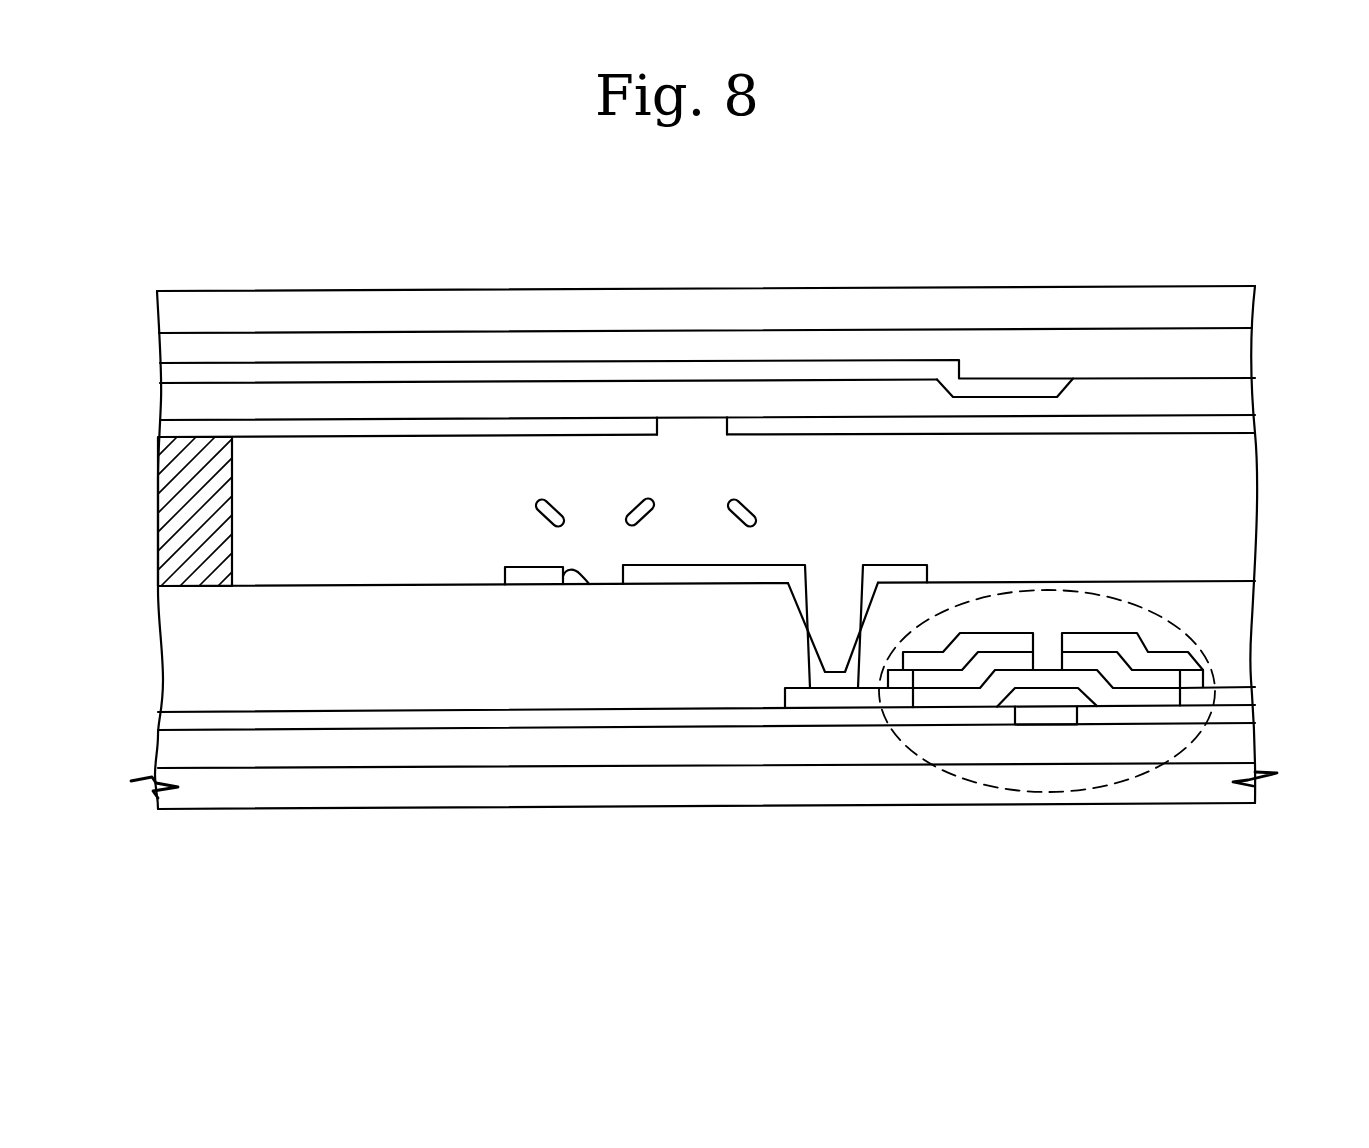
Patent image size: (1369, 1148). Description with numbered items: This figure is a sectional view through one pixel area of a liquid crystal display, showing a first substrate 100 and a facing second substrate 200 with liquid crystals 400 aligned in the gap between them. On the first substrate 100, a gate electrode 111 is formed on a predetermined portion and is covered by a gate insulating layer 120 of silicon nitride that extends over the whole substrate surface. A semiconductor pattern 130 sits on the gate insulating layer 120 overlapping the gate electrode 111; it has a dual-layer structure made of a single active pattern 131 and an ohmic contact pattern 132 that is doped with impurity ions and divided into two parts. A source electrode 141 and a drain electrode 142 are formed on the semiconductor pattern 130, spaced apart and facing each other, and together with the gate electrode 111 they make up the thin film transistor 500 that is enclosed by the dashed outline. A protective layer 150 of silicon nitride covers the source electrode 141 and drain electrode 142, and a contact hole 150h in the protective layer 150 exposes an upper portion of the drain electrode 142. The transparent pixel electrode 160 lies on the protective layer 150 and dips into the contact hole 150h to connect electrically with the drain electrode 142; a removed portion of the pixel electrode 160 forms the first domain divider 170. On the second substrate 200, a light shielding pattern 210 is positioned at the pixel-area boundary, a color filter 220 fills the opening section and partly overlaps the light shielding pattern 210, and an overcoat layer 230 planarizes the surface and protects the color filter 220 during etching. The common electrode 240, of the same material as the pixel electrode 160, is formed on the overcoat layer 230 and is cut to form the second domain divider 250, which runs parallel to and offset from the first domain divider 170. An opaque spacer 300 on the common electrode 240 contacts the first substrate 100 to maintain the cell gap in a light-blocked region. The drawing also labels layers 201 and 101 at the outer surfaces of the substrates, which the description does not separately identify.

The upper base substrate 201 is at (1237, 308).
The second substrate 200 is at (1237, 340).
The light shielding pattern 210 is at (1237, 367).
The color filter 220 is at (175, 370).
The overcoat layer 230 is at (1237, 393).
The common electrode 240 is at (1237, 420).
The second domain divider 250 is at (686, 428).
The spacer 300 is at (175, 500).
The liquid crystals 400 is at (545, 520).
The protective layer 150 is at (175, 648).
The contact hole 150h is at (797, 630).
The pixel electrode 160 is at (531, 587).
The first domain divider 170 is at (588, 586).
The drain electrode 142 is at (826, 703).
The source electrode 141 is at (1237, 697).
The semiconductor pattern 130 is at (1049, 792).
The active pattern 131 is at (936, 700).
The ohmic contact pattern 132 is at (977, 678).
The gate electrode 111 is at (1048, 715).
The gate insulating layer 120 is at (1237, 715).
The first substrate 100 is at (1237, 742).
The lower display substrate 101 is at (1240, 792).
The thin film transistor 500 is at (1095, 793).